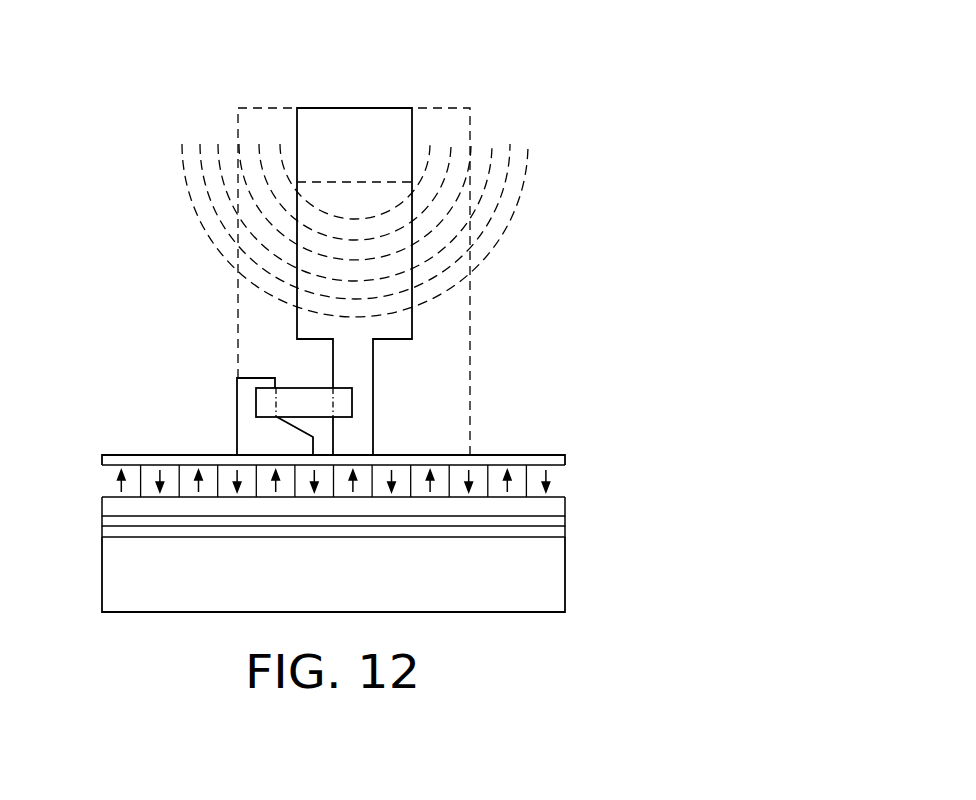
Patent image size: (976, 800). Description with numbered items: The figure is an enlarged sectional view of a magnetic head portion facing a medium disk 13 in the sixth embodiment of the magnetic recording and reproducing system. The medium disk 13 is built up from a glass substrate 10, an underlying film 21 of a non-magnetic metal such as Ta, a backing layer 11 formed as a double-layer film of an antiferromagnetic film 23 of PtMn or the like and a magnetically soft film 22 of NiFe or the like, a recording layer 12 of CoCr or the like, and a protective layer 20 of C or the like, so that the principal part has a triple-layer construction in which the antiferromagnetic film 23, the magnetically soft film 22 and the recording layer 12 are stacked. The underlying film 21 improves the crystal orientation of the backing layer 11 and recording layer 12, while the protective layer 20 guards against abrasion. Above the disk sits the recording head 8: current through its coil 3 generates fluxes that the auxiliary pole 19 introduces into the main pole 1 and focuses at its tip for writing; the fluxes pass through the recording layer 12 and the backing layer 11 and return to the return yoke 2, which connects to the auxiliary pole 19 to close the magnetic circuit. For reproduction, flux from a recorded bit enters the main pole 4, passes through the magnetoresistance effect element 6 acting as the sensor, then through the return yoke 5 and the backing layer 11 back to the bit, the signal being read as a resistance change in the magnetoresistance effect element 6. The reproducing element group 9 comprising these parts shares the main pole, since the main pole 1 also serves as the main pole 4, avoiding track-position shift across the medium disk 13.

The main pole 1 is at (421, 281).
The return yoke 2 is at (453, 343).
The coil 3 is at (503, 218).
The main pole 4 is at (360, 437).
The return yoke 5 is at (250, 430).
The magnetoresistance effect element 6 is at (300, 397).
The recording head 8 is at (485, 92).
The recording element 9 is at (175, 328).
The glass substrate 10 is at (557, 595).
The backing layer 11 is at (661, 480).
The recording layer 12 is at (553, 478).
The medium disk 13 is at (88, 447).
The auxiliary pole 19 is at (390, 328).
The protective layer 20 is at (565, 457).
The underlying film 21 is at (565, 533).
The magnetically soft film 22 is at (560, 502).
The antiferromagnetic film 23 is at (560, 518).